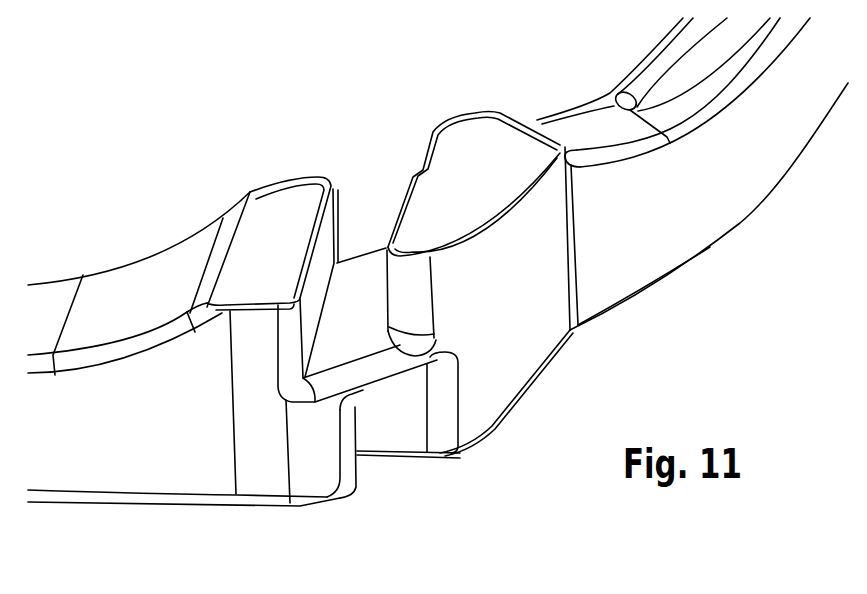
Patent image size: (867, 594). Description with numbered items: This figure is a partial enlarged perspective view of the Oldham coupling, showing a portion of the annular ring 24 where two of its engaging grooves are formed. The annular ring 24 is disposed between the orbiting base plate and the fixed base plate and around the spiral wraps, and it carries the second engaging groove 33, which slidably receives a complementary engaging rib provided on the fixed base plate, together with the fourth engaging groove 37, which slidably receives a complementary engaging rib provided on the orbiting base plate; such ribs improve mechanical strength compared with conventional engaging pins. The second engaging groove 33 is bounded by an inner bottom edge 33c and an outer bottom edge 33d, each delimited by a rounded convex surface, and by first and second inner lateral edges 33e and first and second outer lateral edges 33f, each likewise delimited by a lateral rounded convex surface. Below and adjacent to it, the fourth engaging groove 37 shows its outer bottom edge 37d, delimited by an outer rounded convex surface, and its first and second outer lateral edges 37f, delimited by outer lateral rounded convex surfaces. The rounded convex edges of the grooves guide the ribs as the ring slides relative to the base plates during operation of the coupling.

The annular ring 24 is at (112, 468).
The second engaging groove 33 is at (384, 321).
The inner bottom edge 33c is at (386, 248).
The outer bottom edge 33d is at (405, 332).
The inner lateral edge 33e is at (331, 182).
The outer lateral edge 33f is at (413, 283).
The fourth engaging groove 37 is at (384, 432).
The outer bottom edge 37d is at (393, 367).
The outer lateral edge 37f is at (442, 427).